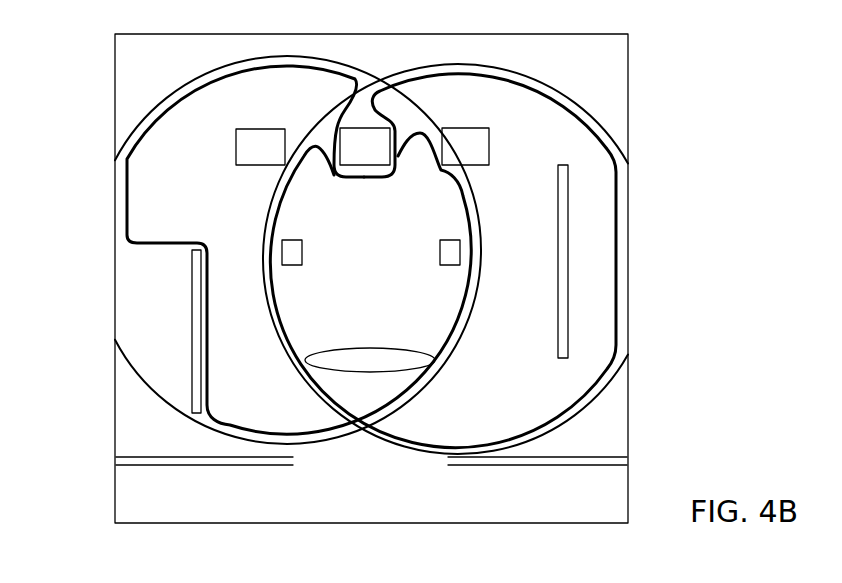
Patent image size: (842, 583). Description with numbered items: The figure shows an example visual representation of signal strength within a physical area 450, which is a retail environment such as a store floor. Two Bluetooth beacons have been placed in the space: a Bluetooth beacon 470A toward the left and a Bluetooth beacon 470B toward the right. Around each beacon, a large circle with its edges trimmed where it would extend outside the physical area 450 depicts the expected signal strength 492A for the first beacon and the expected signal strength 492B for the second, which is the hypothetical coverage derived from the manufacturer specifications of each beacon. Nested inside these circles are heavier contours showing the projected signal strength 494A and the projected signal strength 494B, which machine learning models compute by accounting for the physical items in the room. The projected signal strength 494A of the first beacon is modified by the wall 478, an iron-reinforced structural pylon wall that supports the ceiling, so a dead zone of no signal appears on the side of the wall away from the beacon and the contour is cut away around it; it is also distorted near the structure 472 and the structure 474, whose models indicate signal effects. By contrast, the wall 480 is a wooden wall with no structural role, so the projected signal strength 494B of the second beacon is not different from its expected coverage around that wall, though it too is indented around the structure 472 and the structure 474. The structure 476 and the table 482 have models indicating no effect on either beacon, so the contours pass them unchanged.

The physical area 450 is at (652, 57).
The expected signal strength 492A is at (137, 122).
The expected signal strength 492B is at (602, 125).
The projected signal strength 494A is at (127, 181).
The projected signal strength 494B is at (617, 247).
The structure 472 is at (358, 127).
The structure 474 is at (489, 148).
The structure 476 is at (236, 150).
The Bluetooth beacon 470A is at (302, 252).
The Bluetooth beacon 470B is at (440, 252).
The wall 478 is at (192, 332).
The wall 480 is at (559, 310).
The table 482 is at (371, 348).